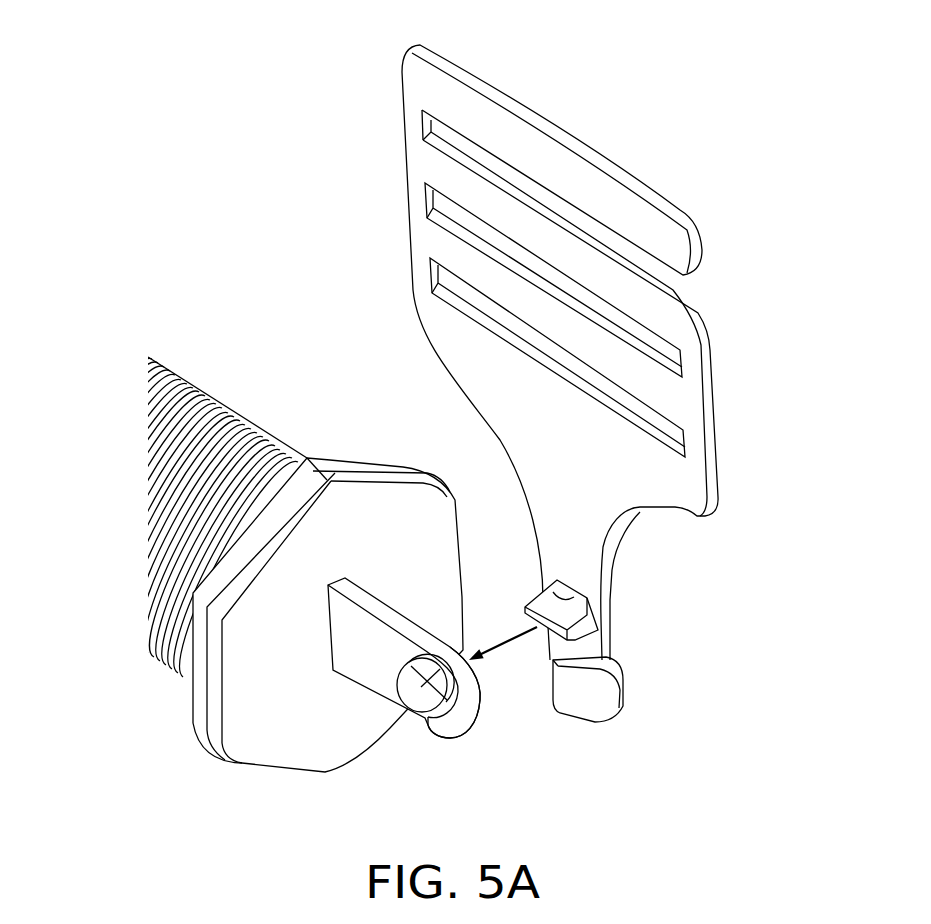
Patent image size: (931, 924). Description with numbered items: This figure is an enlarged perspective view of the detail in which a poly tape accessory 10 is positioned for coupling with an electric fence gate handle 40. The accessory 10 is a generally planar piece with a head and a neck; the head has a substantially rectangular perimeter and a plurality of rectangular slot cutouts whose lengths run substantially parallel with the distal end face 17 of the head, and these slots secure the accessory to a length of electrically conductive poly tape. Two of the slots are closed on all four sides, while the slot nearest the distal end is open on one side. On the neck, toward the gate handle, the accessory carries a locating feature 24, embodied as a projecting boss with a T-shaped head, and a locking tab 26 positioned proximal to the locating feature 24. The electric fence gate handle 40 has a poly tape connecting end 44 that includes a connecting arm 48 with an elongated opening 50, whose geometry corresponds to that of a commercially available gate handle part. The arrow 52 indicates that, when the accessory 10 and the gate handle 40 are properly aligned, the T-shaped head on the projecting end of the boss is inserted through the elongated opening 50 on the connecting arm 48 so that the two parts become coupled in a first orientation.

The poly tape accessory 10 is at (700, 190).
The distal end face 17 is at (511, 102).
The locating feature 24 is at (508, 586).
The locking tab 26 is at (645, 691).
The electric fence gate handle 40 is at (222, 372).
The poly tape connecting end 44 is at (217, 743).
The connecting arm 48 is at (377, 678).
The elongated opening 50 is at (423, 720).
The arrow 52 is at (502, 643).